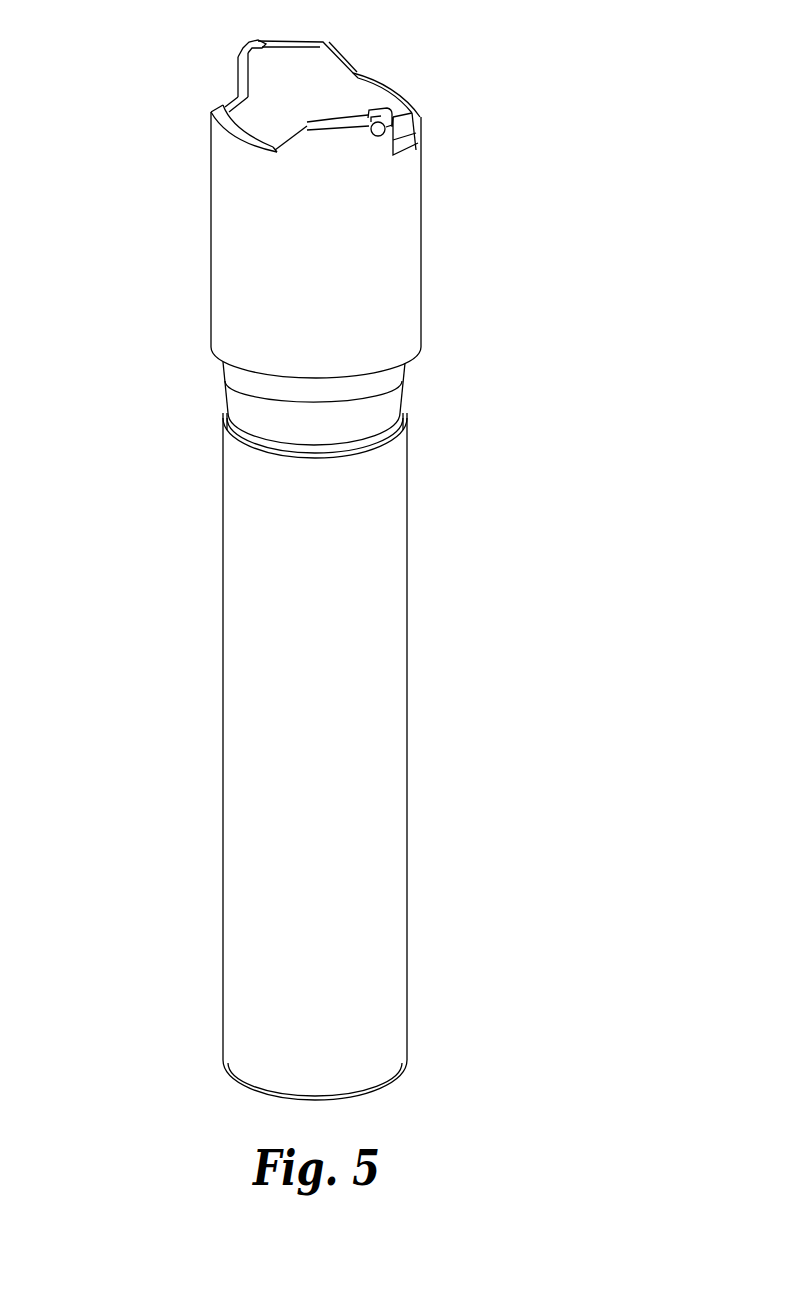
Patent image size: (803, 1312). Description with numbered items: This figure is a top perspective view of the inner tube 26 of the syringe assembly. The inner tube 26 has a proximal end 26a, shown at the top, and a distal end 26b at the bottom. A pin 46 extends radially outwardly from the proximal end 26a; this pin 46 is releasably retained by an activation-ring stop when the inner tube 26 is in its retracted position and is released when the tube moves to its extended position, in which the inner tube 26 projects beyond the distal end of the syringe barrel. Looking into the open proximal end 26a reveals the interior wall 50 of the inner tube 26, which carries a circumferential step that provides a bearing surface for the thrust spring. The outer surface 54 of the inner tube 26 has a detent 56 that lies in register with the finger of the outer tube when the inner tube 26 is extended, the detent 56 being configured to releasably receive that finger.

The inner tube 26 is at (188, 590).
The proximal end 26a is at (193, 128).
The distal end 26b is at (167, 1005).
The pin 46 is at (393, 125).
The interior wall 50 is at (300, 68).
The outer surface 54 is at (417, 258).
The detent 56 is at (398, 398).